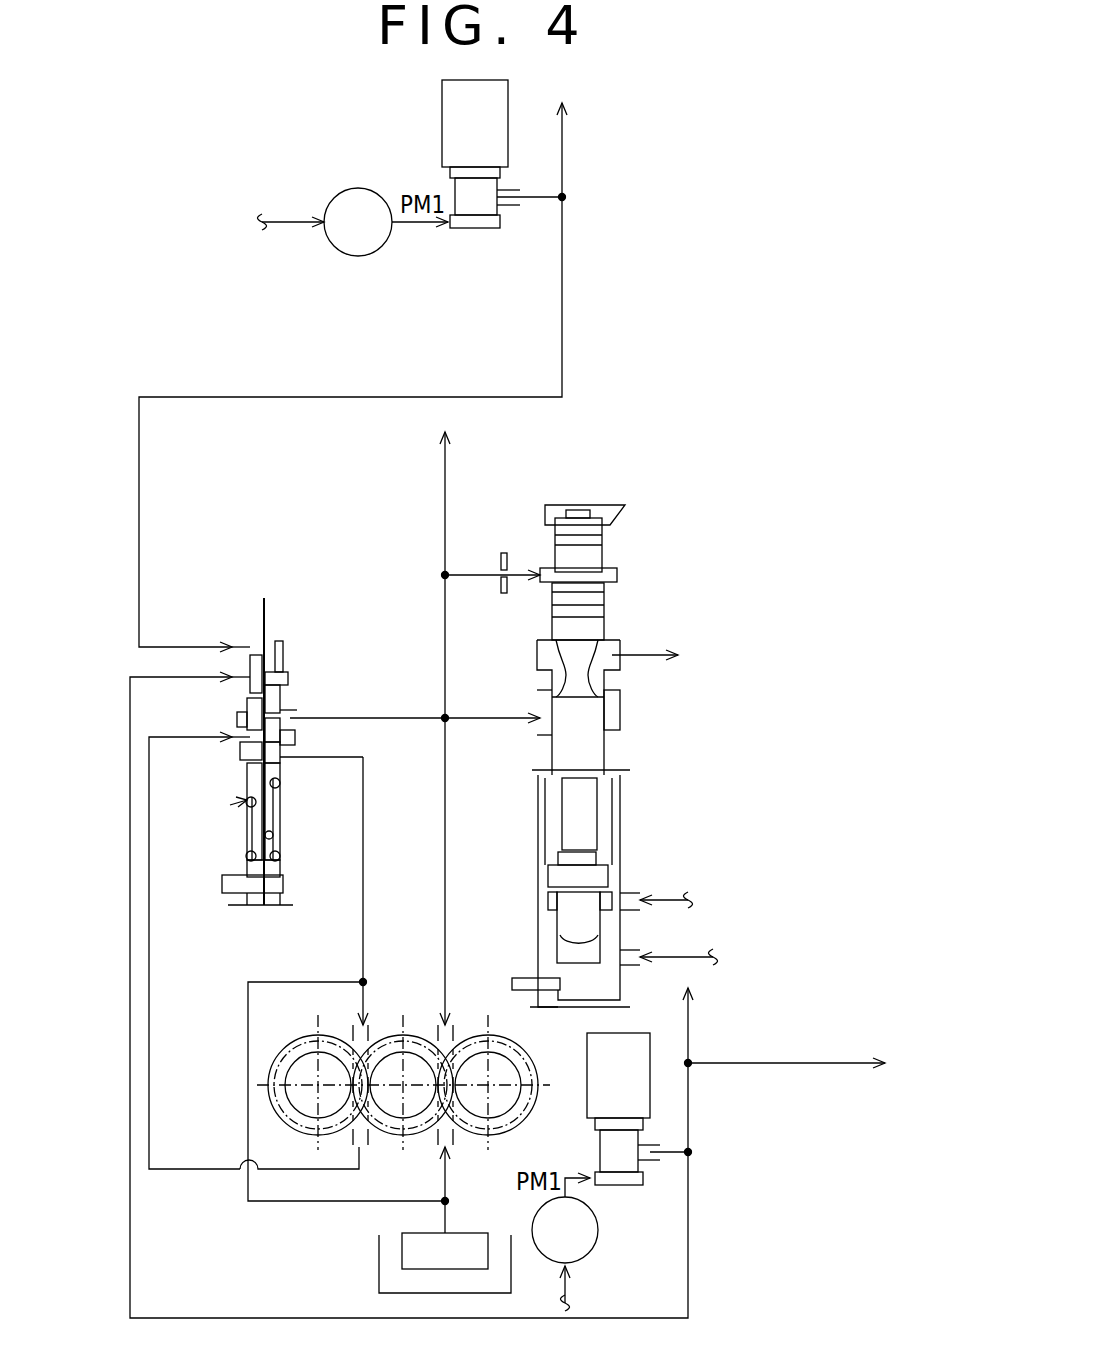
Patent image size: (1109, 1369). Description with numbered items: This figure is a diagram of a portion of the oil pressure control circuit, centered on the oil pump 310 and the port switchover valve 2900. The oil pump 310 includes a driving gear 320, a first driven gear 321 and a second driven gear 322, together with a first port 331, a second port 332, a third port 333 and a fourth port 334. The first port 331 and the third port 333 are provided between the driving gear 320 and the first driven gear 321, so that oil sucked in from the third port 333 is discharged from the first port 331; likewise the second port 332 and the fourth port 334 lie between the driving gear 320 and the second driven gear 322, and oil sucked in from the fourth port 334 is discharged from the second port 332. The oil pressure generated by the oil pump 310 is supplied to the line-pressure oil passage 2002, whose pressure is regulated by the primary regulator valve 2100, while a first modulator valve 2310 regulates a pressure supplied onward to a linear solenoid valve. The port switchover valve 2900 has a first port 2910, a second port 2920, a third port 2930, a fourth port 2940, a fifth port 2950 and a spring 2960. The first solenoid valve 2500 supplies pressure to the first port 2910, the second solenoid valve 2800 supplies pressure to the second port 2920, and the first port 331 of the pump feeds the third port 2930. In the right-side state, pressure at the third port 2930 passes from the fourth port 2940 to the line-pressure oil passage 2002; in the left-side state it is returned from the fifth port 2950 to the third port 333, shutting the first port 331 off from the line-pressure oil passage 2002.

The second solenoid valve 2800 is at (442, 112).
The first modulator valve 2310 is at (355, 257).
The line-pressure oil passage 2002 is at (444, 535).
The primary regulator valve 2100 is at (602, 498).
The port switchover valve 2900 is at (274, 779).
The second port 2920 is at (235, 650).
The fourth port 2940 is at (292, 709).
The first port 2910 is at (235, 688).
The third port 2930 is at (233, 748).
The fifth port 2950 is at (288, 770).
The spring 2960 is at (280, 827).
The oil pump 310 is at (396, 1076).
The first driven gear 321 is at (270, 1048).
The second driven gear 322 is at (518, 1128).
The third port 333 is at (348, 1030).
The second port 332 is at (455, 1025).
The first port 331 is at (345, 1140).
The fourth port 334 is at (458, 1134).
The driving gear 320 is at (397, 1140).
The first solenoid valve 2500 is at (587, 1075).